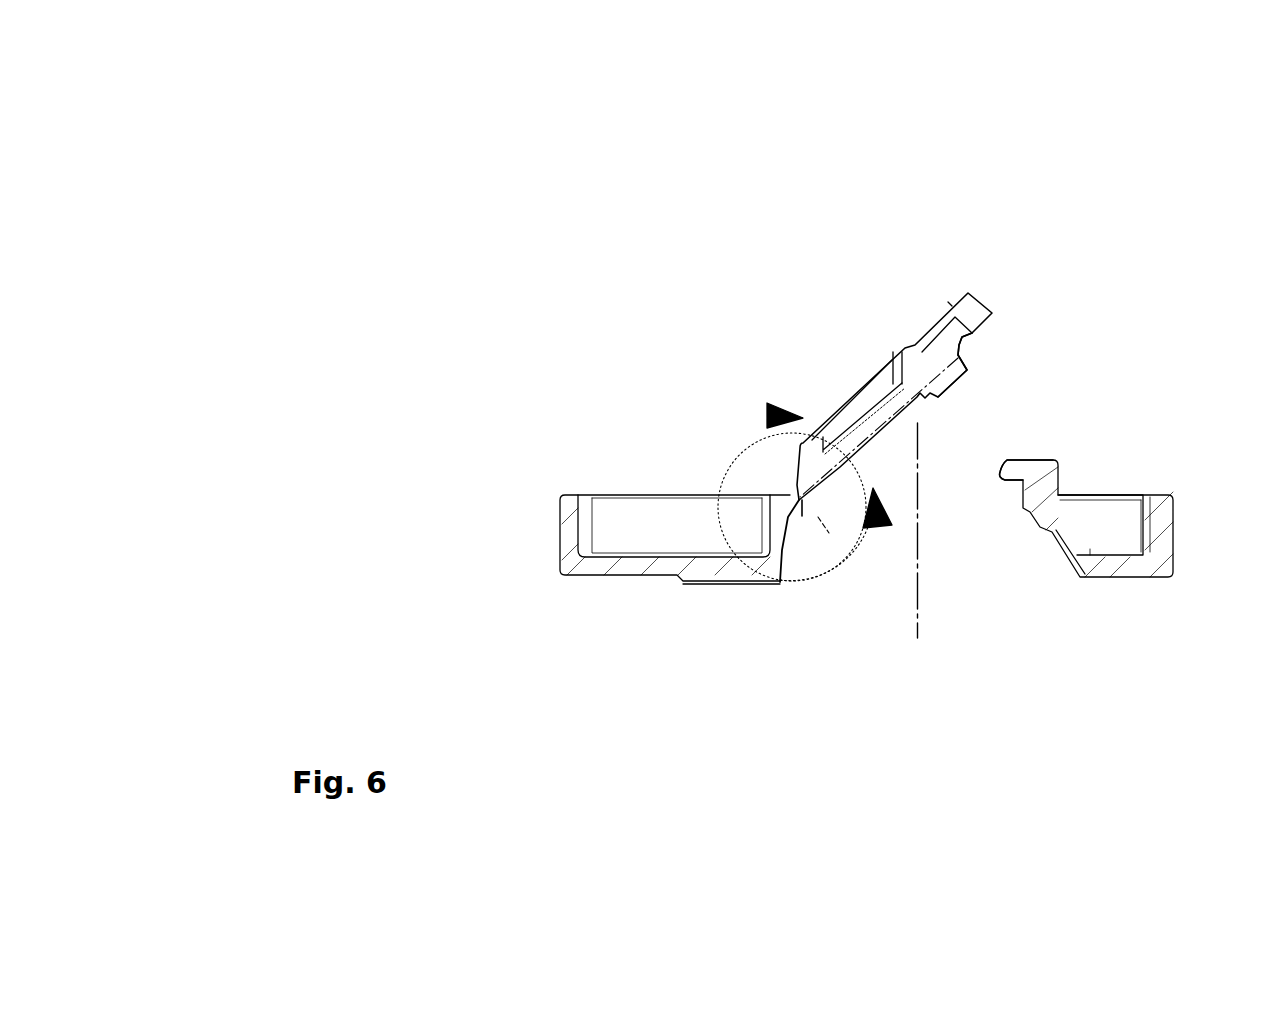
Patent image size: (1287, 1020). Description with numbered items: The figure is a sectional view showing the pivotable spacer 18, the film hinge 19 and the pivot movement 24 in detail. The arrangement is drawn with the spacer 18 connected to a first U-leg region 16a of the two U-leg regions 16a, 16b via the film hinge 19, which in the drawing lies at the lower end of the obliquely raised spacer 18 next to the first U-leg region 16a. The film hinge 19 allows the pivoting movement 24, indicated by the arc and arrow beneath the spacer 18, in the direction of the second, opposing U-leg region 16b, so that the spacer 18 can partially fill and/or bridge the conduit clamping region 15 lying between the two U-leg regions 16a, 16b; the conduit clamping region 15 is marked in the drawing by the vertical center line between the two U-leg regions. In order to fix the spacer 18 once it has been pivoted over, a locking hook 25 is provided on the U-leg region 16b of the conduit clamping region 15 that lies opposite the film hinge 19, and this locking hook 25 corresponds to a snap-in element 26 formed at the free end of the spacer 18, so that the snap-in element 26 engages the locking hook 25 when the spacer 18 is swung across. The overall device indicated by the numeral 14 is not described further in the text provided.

The locking device 14 is at (702, 315).
The conduit clamping region 15 is at (954, 523).
The first U-leg region 16a is at (780, 582).
The second U-leg region 16b is at (1057, 547).
The pivotable spacer 18 is at (876, 378).
The film hinge 19 is at (790, 493).
The pivot movement 24 is at (820, 573).
The locking hook 25 is at (1010, 470).
The snap-in element 26 is at (967, 370).